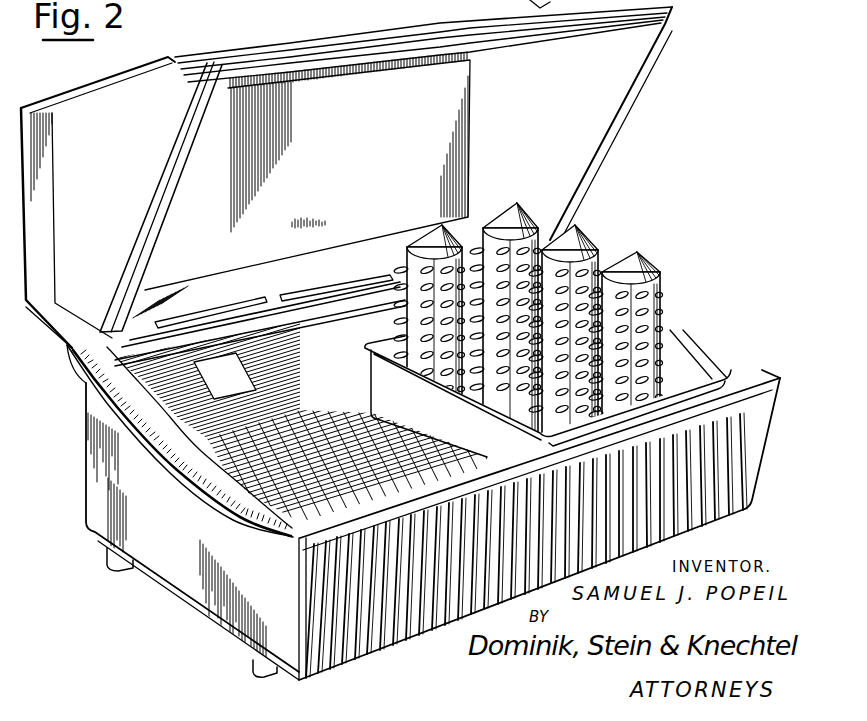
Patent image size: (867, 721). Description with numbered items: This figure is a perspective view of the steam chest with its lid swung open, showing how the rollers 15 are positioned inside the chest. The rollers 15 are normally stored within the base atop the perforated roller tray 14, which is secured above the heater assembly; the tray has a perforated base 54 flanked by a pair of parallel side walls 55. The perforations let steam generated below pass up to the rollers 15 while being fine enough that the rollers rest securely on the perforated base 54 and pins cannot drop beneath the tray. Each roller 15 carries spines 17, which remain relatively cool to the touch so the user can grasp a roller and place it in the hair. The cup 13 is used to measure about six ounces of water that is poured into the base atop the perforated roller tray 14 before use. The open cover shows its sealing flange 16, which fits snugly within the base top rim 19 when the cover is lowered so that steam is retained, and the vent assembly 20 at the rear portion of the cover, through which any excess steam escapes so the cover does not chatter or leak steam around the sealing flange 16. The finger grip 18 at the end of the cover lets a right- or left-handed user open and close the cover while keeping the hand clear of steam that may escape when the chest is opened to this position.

The cup 13 is at (698, 366).
The perforated roller tray 14 is at (260, 463).
The rollers 15 is at (625, 263).
The sealing flange 16 is at (213, 95).
The spines 17 is at (670, 330).
The finger grip 18 is at (45, 283).
The base top rim 19 is at (110, 380).
The vent assembly 20 is at (290, 263).
The perforated base 54 is at (298, 437).
The side walls 55 is at (252, 388).